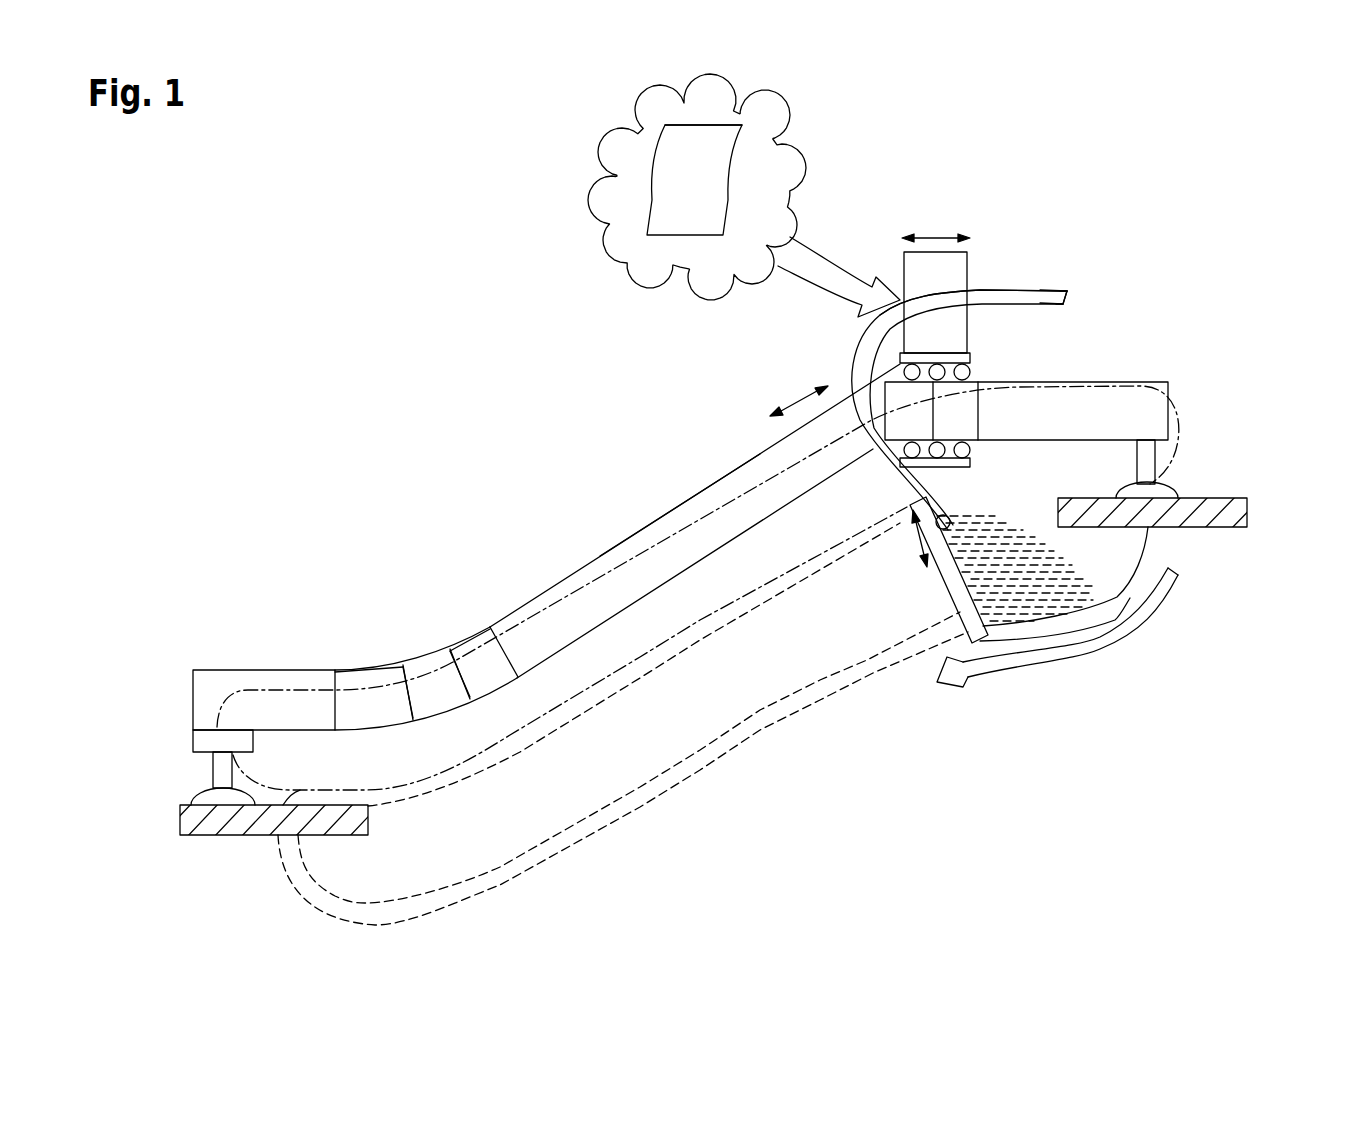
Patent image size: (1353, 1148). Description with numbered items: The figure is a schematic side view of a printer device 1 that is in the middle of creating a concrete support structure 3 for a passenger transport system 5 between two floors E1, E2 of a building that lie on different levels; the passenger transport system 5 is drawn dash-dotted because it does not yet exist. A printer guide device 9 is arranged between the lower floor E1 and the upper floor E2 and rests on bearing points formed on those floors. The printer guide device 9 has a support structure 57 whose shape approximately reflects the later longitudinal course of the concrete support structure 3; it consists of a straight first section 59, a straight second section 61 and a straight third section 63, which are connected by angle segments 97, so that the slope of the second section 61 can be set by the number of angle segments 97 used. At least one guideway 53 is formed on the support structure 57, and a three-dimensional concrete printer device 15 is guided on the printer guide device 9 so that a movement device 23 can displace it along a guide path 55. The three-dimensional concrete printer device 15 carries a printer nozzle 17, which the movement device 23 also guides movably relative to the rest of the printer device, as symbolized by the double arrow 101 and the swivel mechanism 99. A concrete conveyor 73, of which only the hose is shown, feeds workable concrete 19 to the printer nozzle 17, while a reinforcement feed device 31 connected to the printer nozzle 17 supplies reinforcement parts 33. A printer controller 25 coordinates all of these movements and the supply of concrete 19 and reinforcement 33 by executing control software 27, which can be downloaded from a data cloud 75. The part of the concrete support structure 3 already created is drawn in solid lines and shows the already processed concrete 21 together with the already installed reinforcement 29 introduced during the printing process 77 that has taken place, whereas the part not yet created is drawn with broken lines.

The printer device 1 is at (365, 388).
The concrete support structure 3 is at (1135, 546).
The passenger transport system 5 is at (733, 500).
The printer guide device 9 is at (540, 587).
The 3D concrete printer device 15 is at (1000, 272).
The printer nozzle 17 is at (945, 533).
The workable concrete 19 is at (1075, 293).
The already processed concrete 21 is at (1107, 583).
The movement device 23 is at (966, 507).
The printer controller 25 is at (912, 278).
The control software 27 is at (705, 194).
The already installed reinforcement 29 is at (1003, 603).
The reinforcement feed device 31 is at (1040, 296).
The reinforcement parts 33 is at (1075, 302).
The guideway 53 is at (657, 514).
The guide path 55 is at (800, 400).
The support structure 57 is at (185, 660).
The first section 59 is at (265, 690).
The second section 61 is at (594, 562).
The third section 63 is at (1170, 385).
The concrete conveyor 73 is at (985, 290).
The data cloud 75 is at (774, 194).
The printing process 77 is at (1140, 618).
The angle segments 97 is at (472, 643).
The swivel mechanism 99 is at (962, 587).
The double arrow 101 is at (913, 537).
The lower floor E1 is at (155, 812).
The upper floor E2 is at (1180, 472).